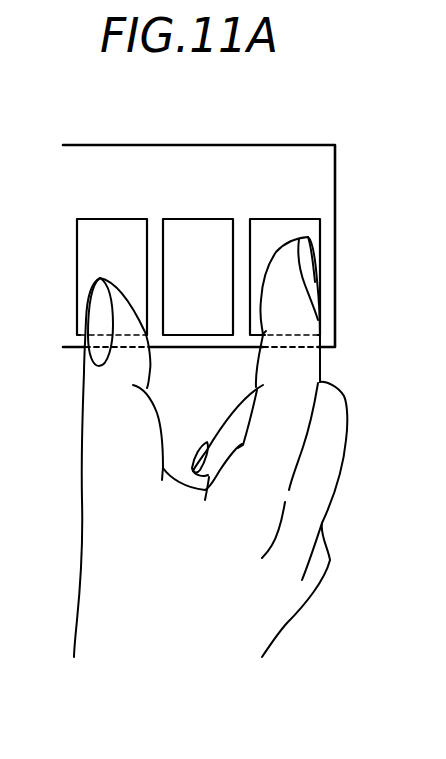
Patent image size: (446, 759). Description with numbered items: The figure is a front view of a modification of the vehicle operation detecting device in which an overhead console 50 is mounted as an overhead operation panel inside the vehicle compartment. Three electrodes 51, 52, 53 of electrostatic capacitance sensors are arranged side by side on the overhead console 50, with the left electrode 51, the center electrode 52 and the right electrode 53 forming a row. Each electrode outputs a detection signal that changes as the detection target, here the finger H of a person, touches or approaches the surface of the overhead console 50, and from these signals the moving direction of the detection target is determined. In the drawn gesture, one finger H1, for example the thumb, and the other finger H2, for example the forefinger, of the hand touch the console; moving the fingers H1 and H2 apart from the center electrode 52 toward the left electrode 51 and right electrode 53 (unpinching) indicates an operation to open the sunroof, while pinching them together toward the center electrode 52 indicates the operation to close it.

The overhead console 50 is at (279, 144).
The left electrode 51 is at (113, 217).
The center electrode 52 is at (198, 217).
The right electrode 53 is at (288, 217).
The one finger H1 is at (80, 398).
The other finger H2 is at (322, 361).
The finger H is at (291, 622).